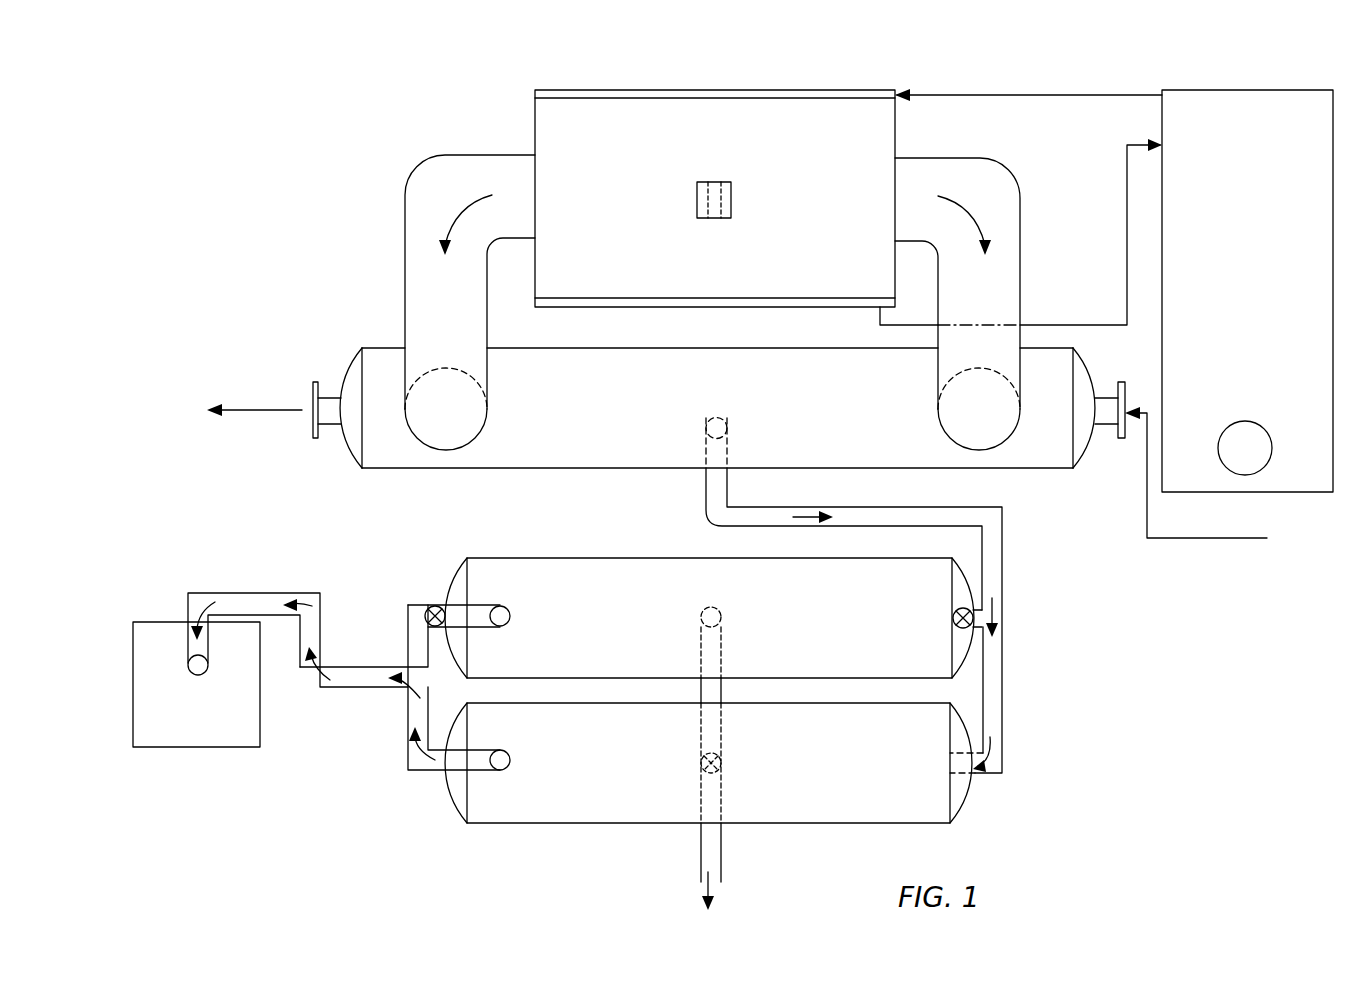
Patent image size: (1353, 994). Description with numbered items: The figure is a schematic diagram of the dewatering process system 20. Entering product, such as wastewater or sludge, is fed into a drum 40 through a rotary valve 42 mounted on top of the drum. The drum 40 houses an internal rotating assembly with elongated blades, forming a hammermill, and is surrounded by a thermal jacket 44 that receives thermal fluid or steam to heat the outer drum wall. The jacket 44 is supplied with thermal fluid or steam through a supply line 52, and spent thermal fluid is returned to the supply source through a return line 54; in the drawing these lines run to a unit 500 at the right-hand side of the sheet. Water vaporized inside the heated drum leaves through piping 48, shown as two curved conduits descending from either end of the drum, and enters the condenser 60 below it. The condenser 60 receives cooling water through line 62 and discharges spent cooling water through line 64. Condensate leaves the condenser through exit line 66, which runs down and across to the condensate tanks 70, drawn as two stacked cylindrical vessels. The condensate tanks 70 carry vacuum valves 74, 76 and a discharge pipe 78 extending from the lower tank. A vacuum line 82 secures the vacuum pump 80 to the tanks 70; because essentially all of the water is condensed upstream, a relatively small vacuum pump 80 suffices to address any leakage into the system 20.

The system 20 is at (1137, 583).
The drum 40 is at (572, 78).
The rotary valve 42 is at (708, 193).
The thermal jacket 44 is at (780, 92).
The piping 48 is at (490, 155).
The supply line 52 is at (1062, 92).
The return line 54 is at (1035, 325).
The condenser 60 is at (397, 475).
The line 62 is at (1202, 540).
The line 64 is at (268, 405).
The exit line 66 is at (1005, 535).
The condensate tanks 70 is at (592, 549).
The vacuum valve 74 is at (975, 618).
The vacuum valve 76 is at (437, 606).
The discharge pipe 78 is at (712, 845).
The vacuum pump 80 is at (204, 778).
The vacuum line 82 is at (270, 605).
The controller 500 is at (1222, 86).